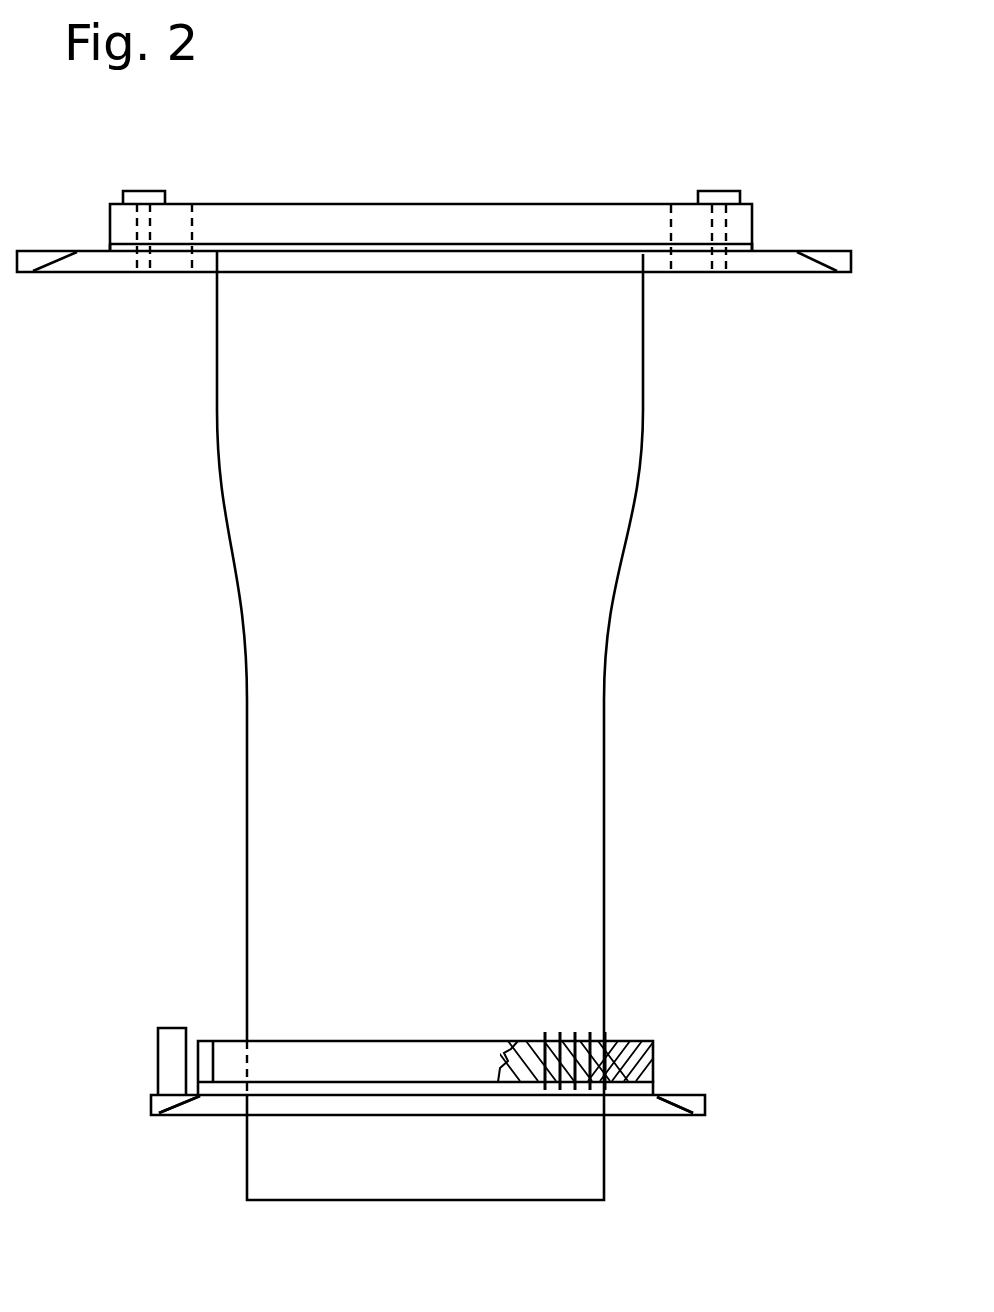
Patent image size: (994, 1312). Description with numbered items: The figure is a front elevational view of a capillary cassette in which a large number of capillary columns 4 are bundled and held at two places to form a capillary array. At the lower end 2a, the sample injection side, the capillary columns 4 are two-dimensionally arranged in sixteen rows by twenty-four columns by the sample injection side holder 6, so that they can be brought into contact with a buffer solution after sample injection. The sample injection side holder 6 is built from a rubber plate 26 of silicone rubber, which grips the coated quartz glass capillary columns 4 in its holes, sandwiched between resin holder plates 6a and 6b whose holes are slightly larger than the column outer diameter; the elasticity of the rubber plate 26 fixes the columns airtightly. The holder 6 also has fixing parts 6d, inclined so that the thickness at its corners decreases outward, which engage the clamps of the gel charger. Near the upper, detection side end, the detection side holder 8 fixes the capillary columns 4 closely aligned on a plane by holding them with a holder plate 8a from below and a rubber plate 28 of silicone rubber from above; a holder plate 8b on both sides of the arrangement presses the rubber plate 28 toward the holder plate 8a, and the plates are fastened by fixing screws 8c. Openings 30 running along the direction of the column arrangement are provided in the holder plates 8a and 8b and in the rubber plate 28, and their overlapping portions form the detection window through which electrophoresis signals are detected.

The end of capillary array 2a is at (590, 1179).
The capillary column 4 is at (248, 565).
The sample injection side holder 6 is at (456, 1082).
The holder plate 6a is at (657, 1117).
The holder plate 6b is at (654, 1058).
The fixing part 6d is at (152, 1107).
The rubber plate 26 is at (654, 1088).
The detection side holder 8 is at (458, 236).
The holder plate 8a is at (736, 273).
The holder plate 8b is at (678, 205).
The fixing screw 8c is at (140, 190).
The rubber plate 28 is at (753, 248).
The opening 30 is at (192, 215).